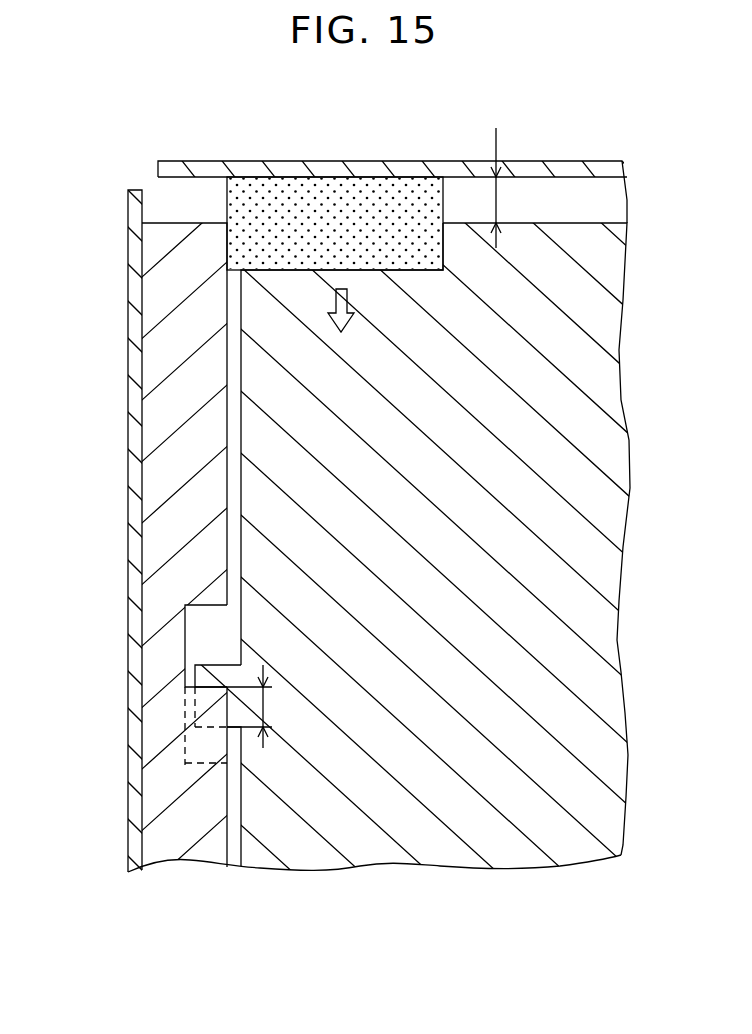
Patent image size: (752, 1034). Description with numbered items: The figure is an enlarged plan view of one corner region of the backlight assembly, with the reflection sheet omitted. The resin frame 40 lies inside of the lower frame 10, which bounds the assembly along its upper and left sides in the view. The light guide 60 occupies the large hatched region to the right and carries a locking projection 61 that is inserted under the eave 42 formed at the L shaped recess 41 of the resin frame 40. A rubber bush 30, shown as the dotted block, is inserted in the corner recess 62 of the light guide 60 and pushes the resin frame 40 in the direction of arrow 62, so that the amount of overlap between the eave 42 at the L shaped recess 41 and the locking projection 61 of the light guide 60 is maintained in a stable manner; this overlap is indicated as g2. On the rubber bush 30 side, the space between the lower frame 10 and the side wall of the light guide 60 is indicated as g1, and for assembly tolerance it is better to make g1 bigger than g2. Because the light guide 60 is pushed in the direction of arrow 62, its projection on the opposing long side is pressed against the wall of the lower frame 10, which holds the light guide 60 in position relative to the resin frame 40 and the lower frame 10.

The lower frame 10 is at (400, 162).
The rubber bush 30 is at (330, 200).
The resin frame 40 is at (162, 423).
The L shaped recess 41 is at (200, 628).
The eave 42 is at (200, 746).
The light guide 60 is at (555, 337).
The locking projection 61 is at (222, 672).
The corner recess / arrow 62 is at (374, 270).
The space between lower frame and light guide side wall g1 is at (482, 188).
The amount of overlap between eave and locking projection g2 is at (262, 706).